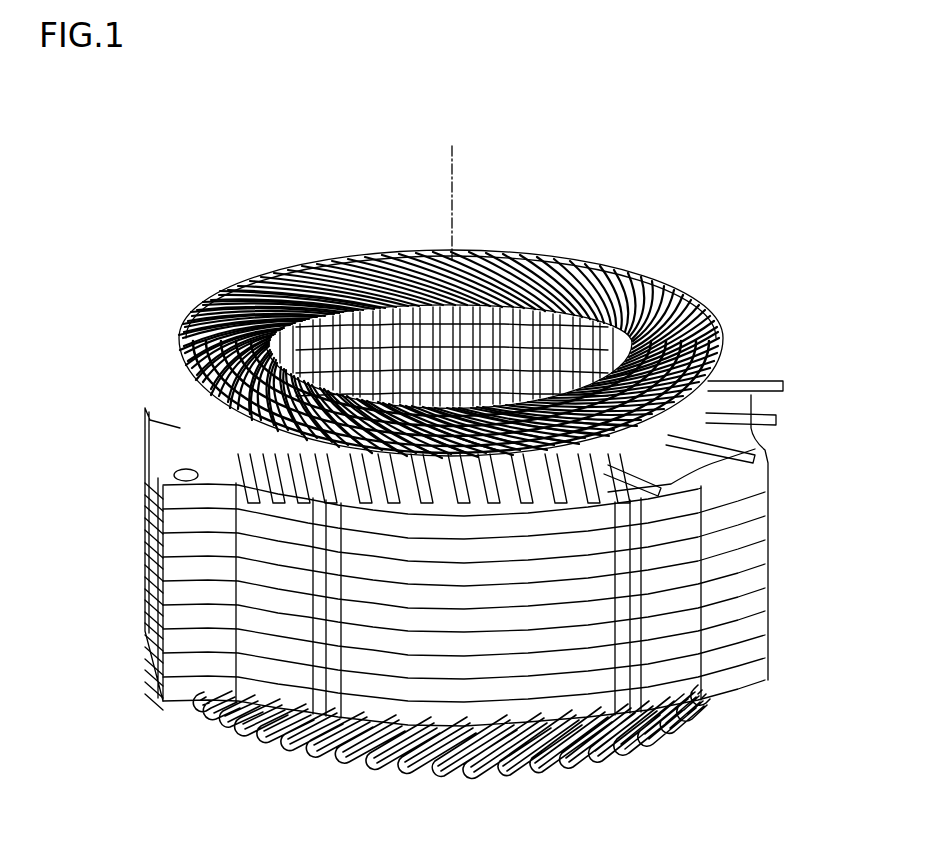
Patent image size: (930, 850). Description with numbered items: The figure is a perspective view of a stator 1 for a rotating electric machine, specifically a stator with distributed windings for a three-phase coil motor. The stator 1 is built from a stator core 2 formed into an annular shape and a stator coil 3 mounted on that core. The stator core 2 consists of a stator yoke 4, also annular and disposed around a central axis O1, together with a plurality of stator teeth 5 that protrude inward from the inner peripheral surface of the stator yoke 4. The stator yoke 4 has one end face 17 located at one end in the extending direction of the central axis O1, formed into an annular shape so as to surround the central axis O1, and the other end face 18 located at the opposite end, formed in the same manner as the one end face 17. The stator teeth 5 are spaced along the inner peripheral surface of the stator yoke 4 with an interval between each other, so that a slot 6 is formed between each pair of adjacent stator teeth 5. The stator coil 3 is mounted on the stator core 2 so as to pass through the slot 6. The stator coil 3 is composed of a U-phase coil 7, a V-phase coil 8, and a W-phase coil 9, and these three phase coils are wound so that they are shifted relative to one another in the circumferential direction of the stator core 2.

The stator 1 is at (287, 118).
The stator core 2 is at (161, 307).
The stator coil 3 is at (665, 255).
The stator yoke 4 is at (735, 486).
The stator teeth 5 is at (322, 340).
The slot 6 is at (372, 340).
The U-phase coil 7 is at (534, 252).
The V-phase coil 8 is at (553, 260).
The W-phase coil 9 is at (576, 268).
The one end face 17 is at (720, 372).
The other end face 18 is at (722, 682).
The central axis O1 is at (447, 143).